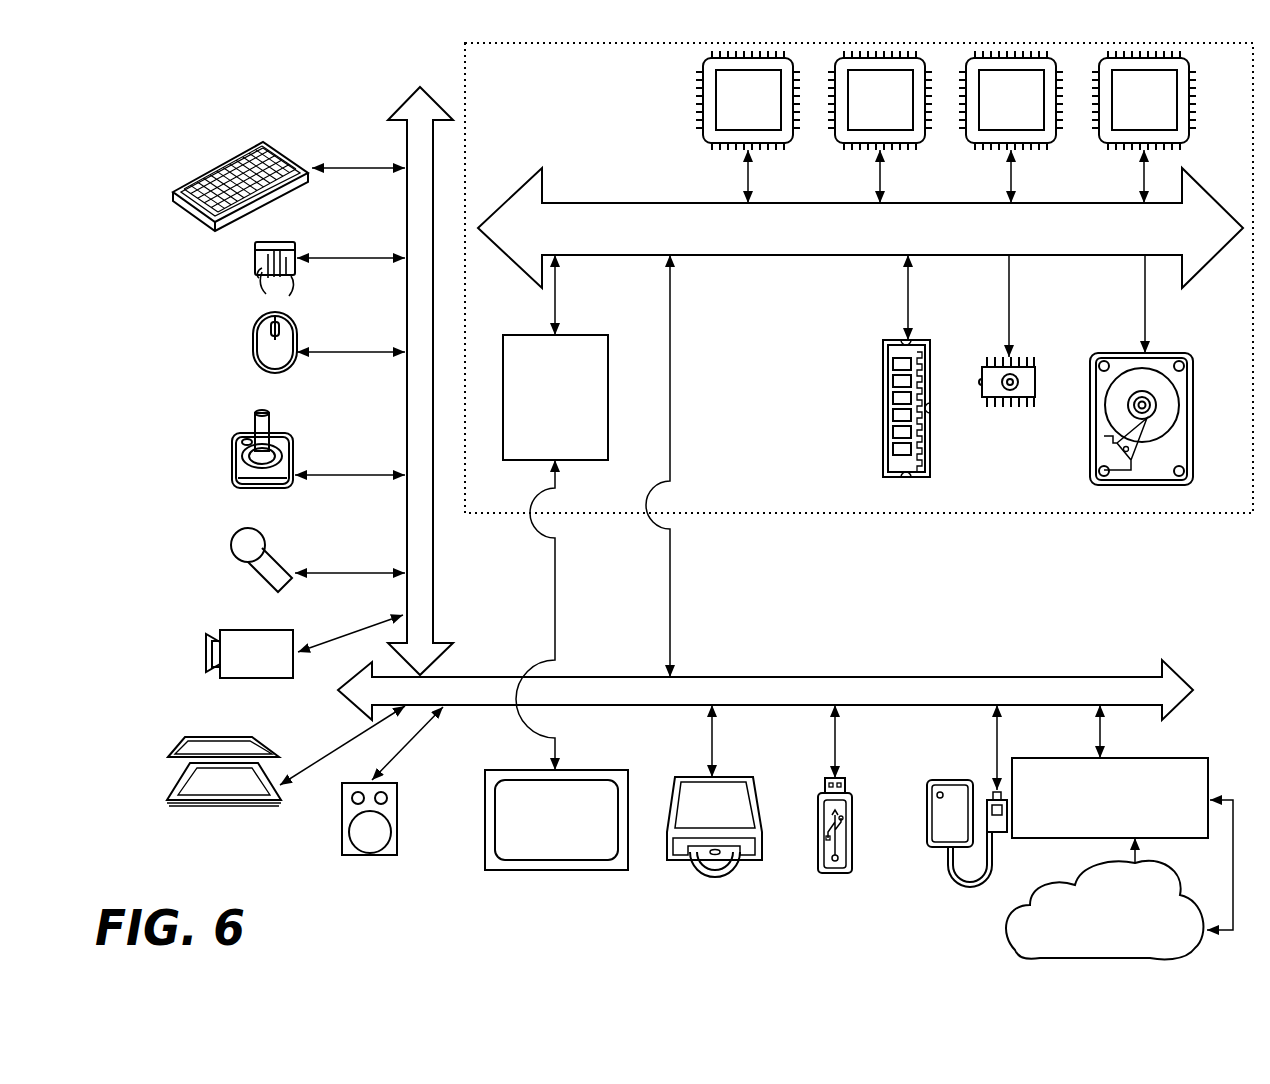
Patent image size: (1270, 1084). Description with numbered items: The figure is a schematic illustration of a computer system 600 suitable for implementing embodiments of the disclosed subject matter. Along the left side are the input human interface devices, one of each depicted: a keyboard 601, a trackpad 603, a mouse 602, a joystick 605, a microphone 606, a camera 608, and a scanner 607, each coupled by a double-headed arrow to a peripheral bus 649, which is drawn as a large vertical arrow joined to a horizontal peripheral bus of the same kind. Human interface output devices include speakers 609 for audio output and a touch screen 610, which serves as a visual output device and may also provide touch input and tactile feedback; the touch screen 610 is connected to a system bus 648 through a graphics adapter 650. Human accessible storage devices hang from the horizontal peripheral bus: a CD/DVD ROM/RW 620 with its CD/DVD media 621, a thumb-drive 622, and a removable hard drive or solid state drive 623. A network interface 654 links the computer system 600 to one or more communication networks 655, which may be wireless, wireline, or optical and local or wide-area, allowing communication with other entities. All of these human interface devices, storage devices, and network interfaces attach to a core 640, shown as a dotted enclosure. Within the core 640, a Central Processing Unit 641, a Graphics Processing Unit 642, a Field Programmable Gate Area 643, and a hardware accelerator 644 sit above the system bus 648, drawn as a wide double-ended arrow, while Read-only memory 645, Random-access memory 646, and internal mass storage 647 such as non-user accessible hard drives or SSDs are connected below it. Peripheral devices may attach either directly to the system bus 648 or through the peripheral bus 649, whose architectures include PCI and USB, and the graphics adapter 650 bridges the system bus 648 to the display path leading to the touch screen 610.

The computer system 600 is at (168, 105).
The keyboard 601 is at (173, 197).
The mouse 602 is at (253, 342).
The trackpad 603 is at (255, 262).
The joystick 605 is at (232, 470).
The microphone 606 is at (233, 545).
The scanner 607 is at (170, 796).
The camera 608 is at (206, 656).
The speakers 609 is at (369, 856).
The touch screen 610 is at (555, 872).
The CD/DVD ROM/RW 620 is at (714, 813).
The CD/DVD media 621 is at (698, 866).
The thumb-drive 622 is at (837, 874).
The removable hard drive or solid state drive 623 is at (934, 850).
The core 640 is at (850, 513).
The Central Processing Unit 641 is at (748, 127).
The Graphics Processing Unit 642 is at (880, 127).
The Field Programmable Gate Area 643 is at (1011, 127).
The hardware accelerator 644 is at (1144, 127).
The Read-only memory 645 is at (1003, 408).
The Random-access memory 646 is at (882, 440).
The internal mass storage 647 is at (1105, 352).
The system bus 648 is at (860, 228).
The peripheral bus 649 is at (405, 131).
The graphics adapter 650 is at (555, 357).
The network interface 654 is at (1110, 771).
The communication networks 655 is at (1010, 936).